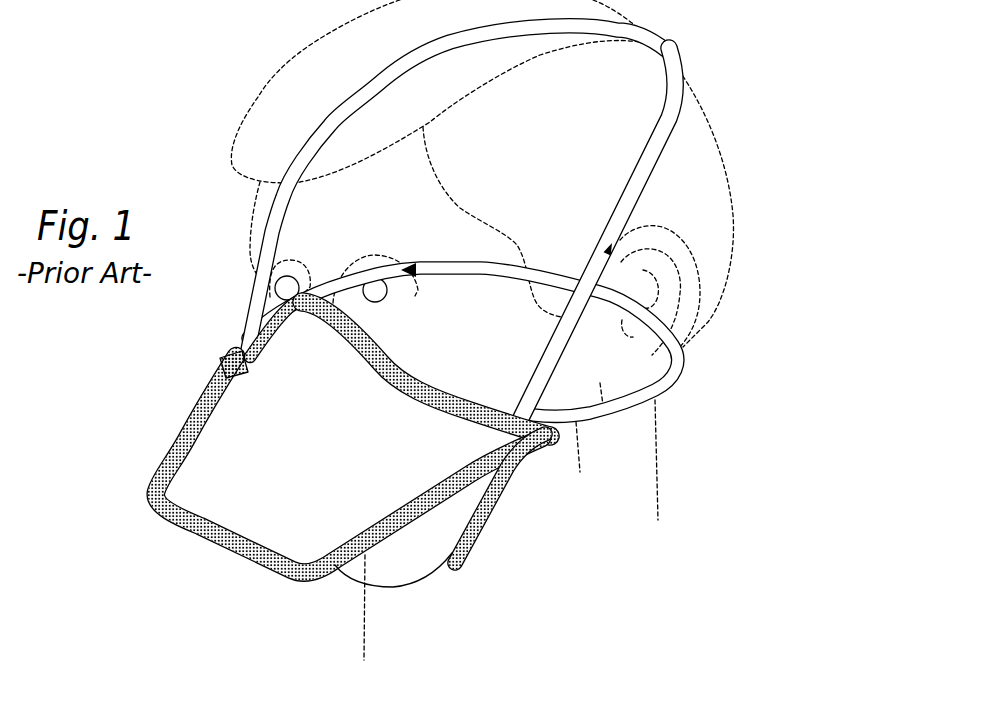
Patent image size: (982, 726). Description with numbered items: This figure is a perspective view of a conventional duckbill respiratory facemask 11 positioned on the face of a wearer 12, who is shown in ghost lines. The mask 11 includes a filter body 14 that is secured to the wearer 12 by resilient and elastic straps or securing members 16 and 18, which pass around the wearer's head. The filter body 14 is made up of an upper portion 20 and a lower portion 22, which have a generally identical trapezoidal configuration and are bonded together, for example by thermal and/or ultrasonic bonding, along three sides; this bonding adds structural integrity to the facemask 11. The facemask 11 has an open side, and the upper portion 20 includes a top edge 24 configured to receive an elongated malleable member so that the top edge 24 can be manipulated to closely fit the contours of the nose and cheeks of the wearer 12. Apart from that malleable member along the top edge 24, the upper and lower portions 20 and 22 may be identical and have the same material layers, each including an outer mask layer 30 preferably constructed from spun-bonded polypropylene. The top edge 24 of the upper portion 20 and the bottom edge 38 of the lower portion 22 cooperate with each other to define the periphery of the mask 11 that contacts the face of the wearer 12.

The duckbill facemask 11 is at (423, 328).
The wearer 12 is at (733, 217).
The filter body 14 is at (200, 548).
The securing member 16 is at (270, 230).
The securing member 18 is at (442, 285).
The upper portion 20 is at (230, 443).
The lower portion 22 is at (375, 568).
The top edge 24 is at (437, 390).
The outer mask layer 30 is at (210, 473).
The bottom edge 38 is at (483, 517).